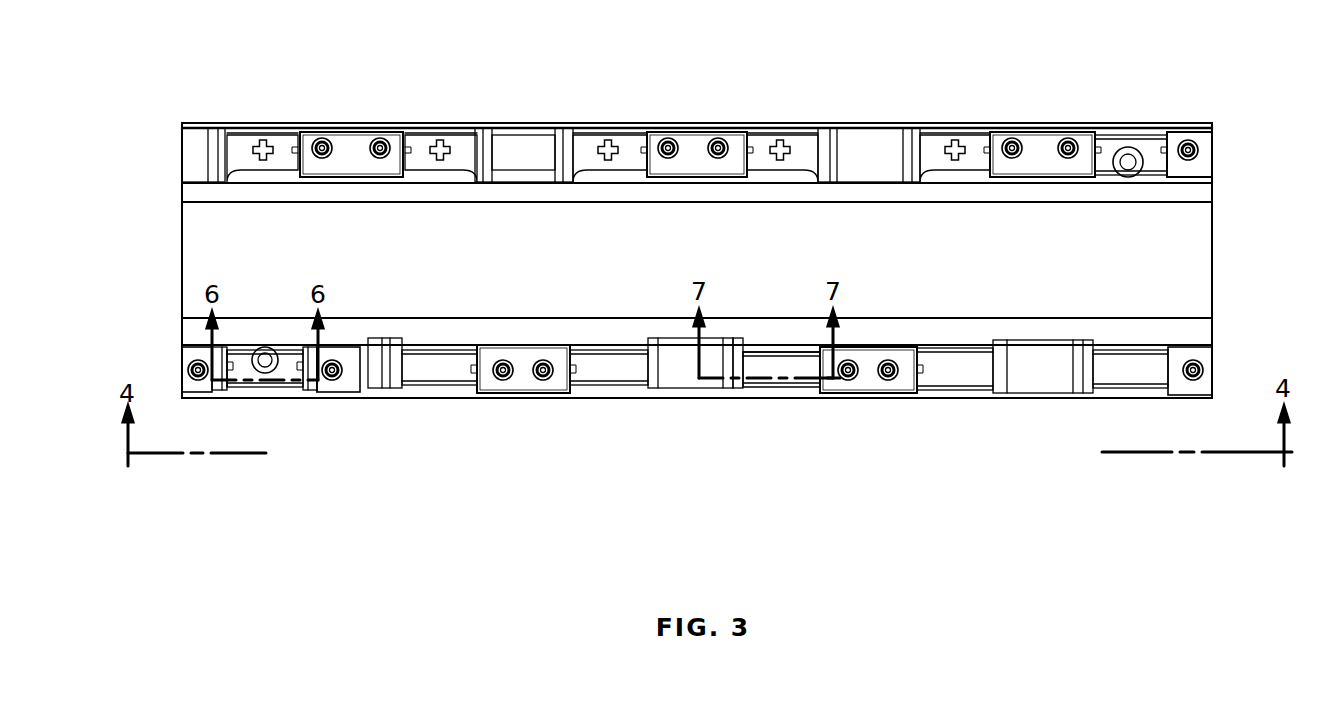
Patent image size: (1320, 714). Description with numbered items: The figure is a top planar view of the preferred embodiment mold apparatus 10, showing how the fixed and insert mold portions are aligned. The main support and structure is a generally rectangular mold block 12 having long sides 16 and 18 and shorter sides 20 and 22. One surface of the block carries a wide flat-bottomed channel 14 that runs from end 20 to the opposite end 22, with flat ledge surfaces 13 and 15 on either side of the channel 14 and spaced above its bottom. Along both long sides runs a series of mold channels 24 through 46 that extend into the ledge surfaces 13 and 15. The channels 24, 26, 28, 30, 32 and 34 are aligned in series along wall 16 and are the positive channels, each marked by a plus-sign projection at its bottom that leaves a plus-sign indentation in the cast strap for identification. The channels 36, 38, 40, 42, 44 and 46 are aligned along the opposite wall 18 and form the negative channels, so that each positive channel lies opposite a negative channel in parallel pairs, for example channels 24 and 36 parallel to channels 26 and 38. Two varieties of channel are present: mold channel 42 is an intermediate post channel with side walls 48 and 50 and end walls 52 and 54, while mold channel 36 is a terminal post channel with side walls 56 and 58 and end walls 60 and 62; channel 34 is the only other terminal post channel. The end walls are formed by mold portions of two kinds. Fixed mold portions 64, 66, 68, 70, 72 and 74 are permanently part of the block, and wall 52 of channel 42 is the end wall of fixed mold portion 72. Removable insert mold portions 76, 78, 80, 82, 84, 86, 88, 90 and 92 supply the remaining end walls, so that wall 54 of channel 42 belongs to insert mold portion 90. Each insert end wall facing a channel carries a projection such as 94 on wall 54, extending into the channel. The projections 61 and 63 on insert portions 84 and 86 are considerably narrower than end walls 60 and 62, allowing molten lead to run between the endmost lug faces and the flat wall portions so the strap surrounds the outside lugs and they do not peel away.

The mold apparatus 10 is at (1087, 40).
The mold block 12 is at (1240, 252).
The ledge surface 13 is at (195, 333).
The wide flat-bottomed channel 14 is at (203, 245).
The ledge surface 15 is at (200, 194).
The long side 16 is at (517, 122).
The long side 18 is at (475, 397).
The shorter side 20 is at (182, 214).
The shorter side 22 is at (1212, 308).
The mold channel 24 is at (280, 143).
The mold channel 26 is at (455, 147).
The mold channel 28 is at (588, 145).
The mold channel 30 is at (767, 145).
The mold channel 32 is at (940, 147).
The terminal post channel 34 is at (1110, 147).
The terminal post mold channel 36 is at (284, 382).
The mold channel 38 is at (438, 370).
The mold channel 40 is at (598, 370).
The intermediate post channel 42 is at (780, 365).
The mold channel 44 is at (956, 370).
The mold channel 46 is at (1122, 370).
The side wall 48 is at (760, 350).
The side wall 50 is at (765, 386).
The end wall 52 is at (737, 357).
The end wall 54 is at (820, 360).
The side wall 56 is at (236, 360).
The side wall 58 is at (277, 385).
The end wall 60 is at (220, 383).
The projection 61 is at (224, 362).
The end wall 62 is at (302, 365).
The projection 63 is at (318, 356).
The fixed mold portion 64 is at (197, 150).
The fixed mold portion 66 is at (528, 148).
The fixed mold portion 68 is at (862, 150).
The fixed mold portion 70 is at (387, 388).
The fixed mold portion 72 is at (680, 373).
The fixed mold portion 74 is at (1042, 365).
The insert mold portion 76 is at (347, 147).
The insert mold portion 78 is at (693, 147).
The insert mold portion 80 is at (1033, 143).
The insert mold portion 82 is at (1198, 140).
The insert mold portion 84 is at (193, 382).
The insert mold portion 86 is at (350, 382).
The insert mold portion 88 is at (521, 377).
The insert mold portion 90 is at (869, 376).
The insert mold portion 92 is at (1183, 375).
The projection 94 is at (815, 378).